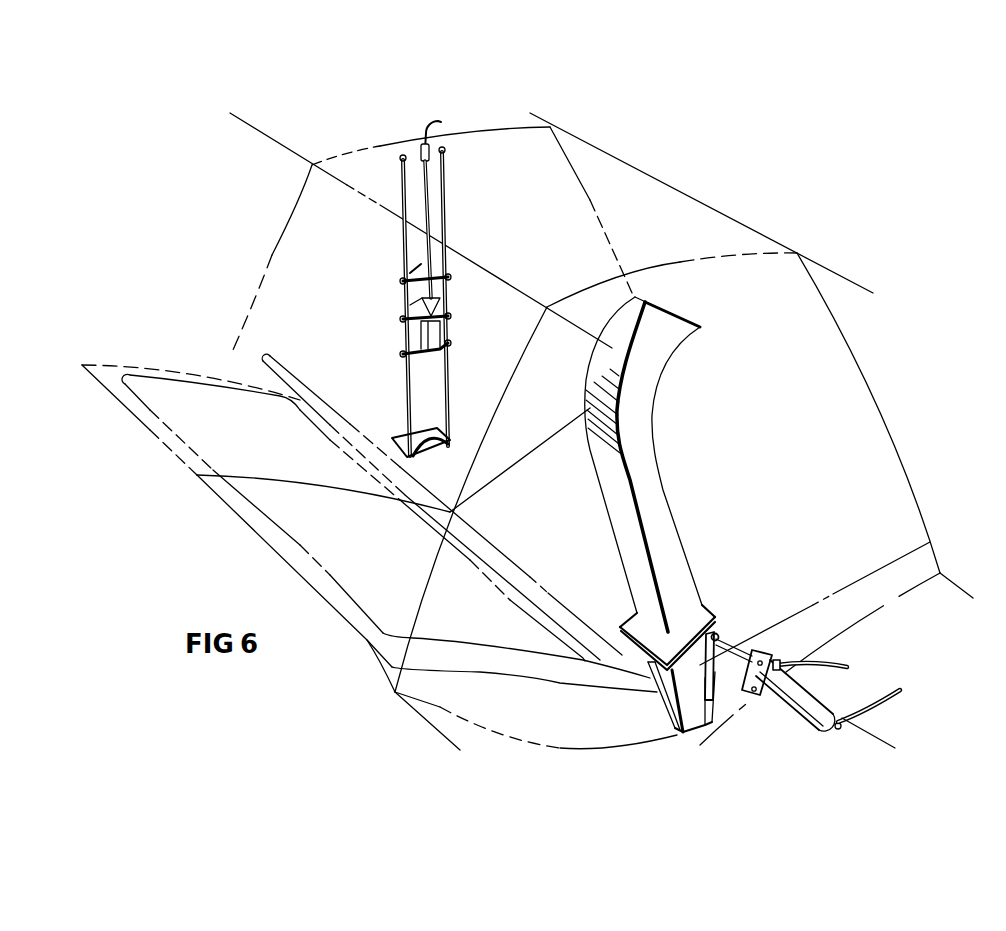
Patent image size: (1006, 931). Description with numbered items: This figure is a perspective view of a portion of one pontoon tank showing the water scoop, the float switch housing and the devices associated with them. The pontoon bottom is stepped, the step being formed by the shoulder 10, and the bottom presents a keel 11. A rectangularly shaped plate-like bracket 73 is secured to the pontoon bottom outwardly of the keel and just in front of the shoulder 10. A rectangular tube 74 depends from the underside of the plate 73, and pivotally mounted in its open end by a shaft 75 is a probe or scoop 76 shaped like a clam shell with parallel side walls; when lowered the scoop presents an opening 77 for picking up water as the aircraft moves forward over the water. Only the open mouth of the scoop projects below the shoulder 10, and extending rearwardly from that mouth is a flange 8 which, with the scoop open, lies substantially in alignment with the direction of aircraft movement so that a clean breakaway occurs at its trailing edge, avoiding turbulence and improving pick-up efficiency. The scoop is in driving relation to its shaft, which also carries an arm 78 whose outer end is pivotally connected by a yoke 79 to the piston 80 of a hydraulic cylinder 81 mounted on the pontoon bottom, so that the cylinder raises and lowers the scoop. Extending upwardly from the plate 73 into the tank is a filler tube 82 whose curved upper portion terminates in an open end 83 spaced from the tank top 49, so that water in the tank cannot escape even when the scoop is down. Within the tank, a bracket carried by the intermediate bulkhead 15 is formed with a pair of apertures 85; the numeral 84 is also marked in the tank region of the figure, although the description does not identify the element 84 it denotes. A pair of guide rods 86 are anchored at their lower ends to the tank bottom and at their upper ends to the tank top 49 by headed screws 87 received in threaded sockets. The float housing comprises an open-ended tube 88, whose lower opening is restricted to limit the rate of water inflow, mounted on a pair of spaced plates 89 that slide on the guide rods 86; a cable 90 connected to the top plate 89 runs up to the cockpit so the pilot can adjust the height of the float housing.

The flange 8 is at (657, 737).
The shoulder 10 is at (408, 689).
The keel 11 is at (478, 549).
The intermediate bulkhead 15 is at (279, 245).
The tank top 49 is at (690, 204).
The plate-like bracket 73 is at (697, 615).
The rectangularly shaped tube 74 is at (663, 668).
The shaft 75 is at (680, 733).
The scoop 76 is at (673, 715).
The opening 77 is at (733, 717).
The arm 78 is at (718, 639).
The yoke 79 is at (722, 642).
The piston 80 is at (754, 651).
The hydraulic cylinder 81 is at (802, 697).
The filler tube 82 is at (642, 400).
The open end 83 is at (673, 310).
The hood fold line 84 is at (555, 541).
The apertures 85 is at (447, 448).
The guide rods 86 is at (445, 386).
The headed screws 87 is at (448, 444).
The tube 88 is at (441, 331).
The spaced plates 89 is at (449, 309).
The cable 90 is at (428, 183).